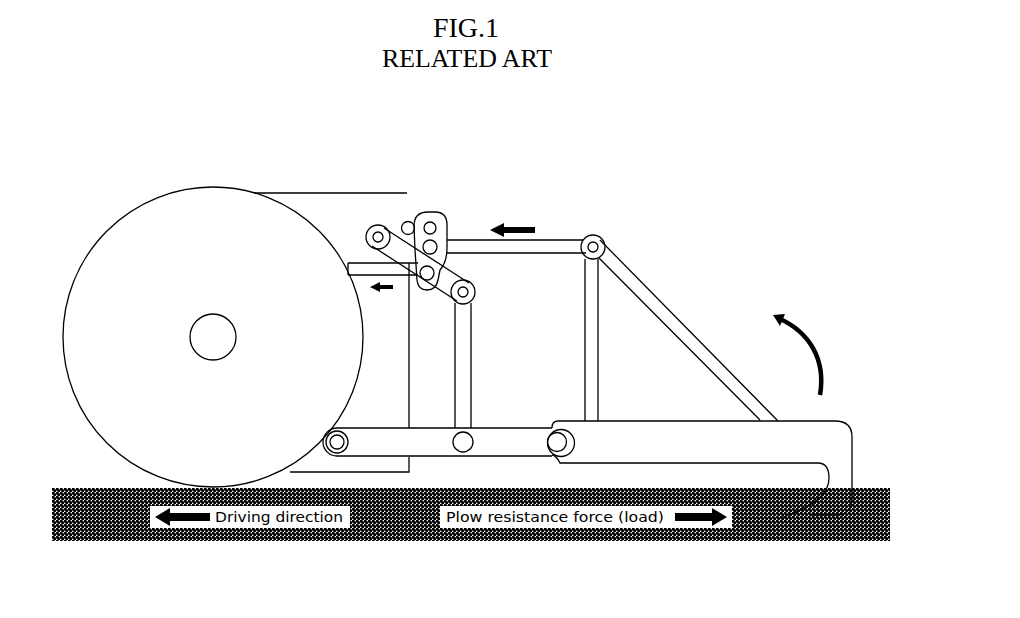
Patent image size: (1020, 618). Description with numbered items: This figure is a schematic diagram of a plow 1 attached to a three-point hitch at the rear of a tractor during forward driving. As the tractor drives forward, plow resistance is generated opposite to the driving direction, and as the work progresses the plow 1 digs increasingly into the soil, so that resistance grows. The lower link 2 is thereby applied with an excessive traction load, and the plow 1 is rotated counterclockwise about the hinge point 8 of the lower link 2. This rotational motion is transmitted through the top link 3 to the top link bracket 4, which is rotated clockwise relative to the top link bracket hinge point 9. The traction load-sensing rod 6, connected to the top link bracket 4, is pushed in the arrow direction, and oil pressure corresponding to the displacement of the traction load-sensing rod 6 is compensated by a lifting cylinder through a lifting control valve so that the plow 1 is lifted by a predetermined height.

The plow 1 is at (683, 418).
The lower link 2 is at (490, 433).
The top link 3 is at (563, 242).
The top link bracket 4 is at (436, 205).
The traction load-sensing rod 6 is at (358, 263).
The hinge point of the lower link 8 is at (554, 432).
The top link bracket hinge point 9 is at (406, 221).